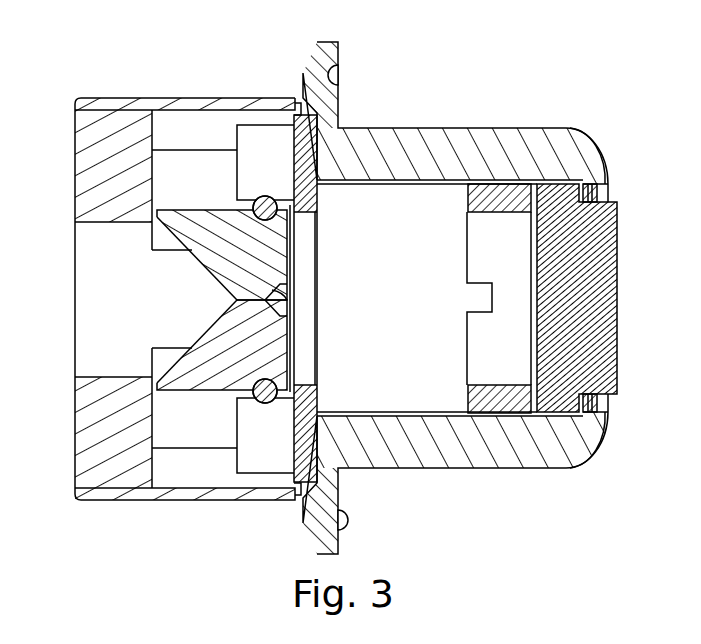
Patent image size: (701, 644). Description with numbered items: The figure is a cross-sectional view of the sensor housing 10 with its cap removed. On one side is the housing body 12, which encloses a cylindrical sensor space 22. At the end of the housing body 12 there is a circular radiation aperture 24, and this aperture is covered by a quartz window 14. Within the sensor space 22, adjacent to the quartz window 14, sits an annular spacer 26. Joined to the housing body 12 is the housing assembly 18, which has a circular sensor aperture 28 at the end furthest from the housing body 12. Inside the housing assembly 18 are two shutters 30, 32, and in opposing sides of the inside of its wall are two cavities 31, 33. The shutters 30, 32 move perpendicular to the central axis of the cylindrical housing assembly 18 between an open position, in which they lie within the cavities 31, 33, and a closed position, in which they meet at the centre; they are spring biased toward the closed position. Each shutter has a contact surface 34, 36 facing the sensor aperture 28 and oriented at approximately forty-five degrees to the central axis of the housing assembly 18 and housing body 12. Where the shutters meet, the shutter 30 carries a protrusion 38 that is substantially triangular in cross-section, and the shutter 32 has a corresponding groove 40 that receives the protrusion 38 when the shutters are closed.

The sensor housing 10 is at (372, 41).
The housing body 12 is at (438, 142).
The quartz window 14 is at (592, 300).
The housing assembly 18 is at (170, 97).
The sensor space 22 is at (417, 395).
The radiation aperture 24 is at (598, 186).
The annular spacer 26 is at (500, 187).
The sensor aperture 28 is at (90, 310).
The shutter 30 is at (226, 222).
The cavity 31 is at (271, 133).
The shutter 32 is at (226, 385).
The cavity 33 is at (268, 458).
The contact surface 34 is at (212, 271).
The contact surface 36 is at (207, 329).
The protrusion 38 is at (272, 292).
The groove 40 is at (273, 313).